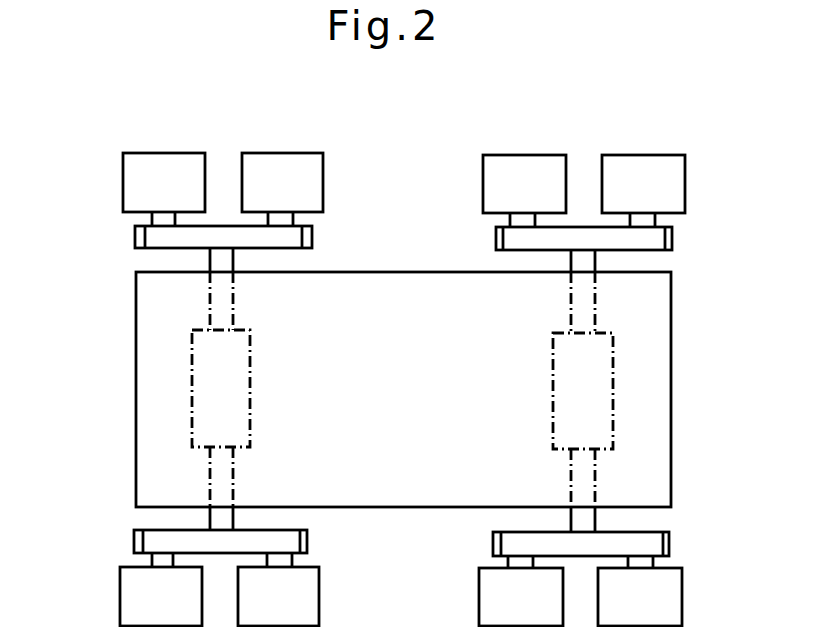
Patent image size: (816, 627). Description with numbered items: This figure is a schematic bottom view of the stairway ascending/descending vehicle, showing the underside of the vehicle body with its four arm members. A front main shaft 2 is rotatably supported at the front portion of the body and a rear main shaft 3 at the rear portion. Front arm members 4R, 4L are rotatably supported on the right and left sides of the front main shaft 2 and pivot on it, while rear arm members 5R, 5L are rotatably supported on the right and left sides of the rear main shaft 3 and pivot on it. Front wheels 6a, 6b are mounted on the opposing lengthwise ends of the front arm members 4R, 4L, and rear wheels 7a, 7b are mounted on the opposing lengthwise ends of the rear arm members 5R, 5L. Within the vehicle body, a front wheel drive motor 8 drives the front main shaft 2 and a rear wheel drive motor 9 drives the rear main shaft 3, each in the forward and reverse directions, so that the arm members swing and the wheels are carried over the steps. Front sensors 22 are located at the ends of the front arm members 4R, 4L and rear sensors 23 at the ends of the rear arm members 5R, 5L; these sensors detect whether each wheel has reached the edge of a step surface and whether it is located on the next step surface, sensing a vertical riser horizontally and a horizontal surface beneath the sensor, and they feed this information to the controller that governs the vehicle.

The front main shaft 2 is at (233, 307).
The rear main shaft 3 is at (565, 320).
The front arm member 4L is at (150, 238).
The front arm member 4R is at (147, 542).
The rear arm member 5L is at (657, 238).
The rear arm member 5R is at (657, 546).
The front wheel 6a is at (147, 182).
The front wheel 6b is at (297, 182).
The rear wheel 7a is at (512, 187).
The rear wheel 7b is at (663, 183).
The front wheel drive motor 8 is at (250, 395).
The rear wheel drive motor 9 is at (552, 400).
The front sensor 22 is at (312, 240).
The rear sensor 23 is at (497, 237).